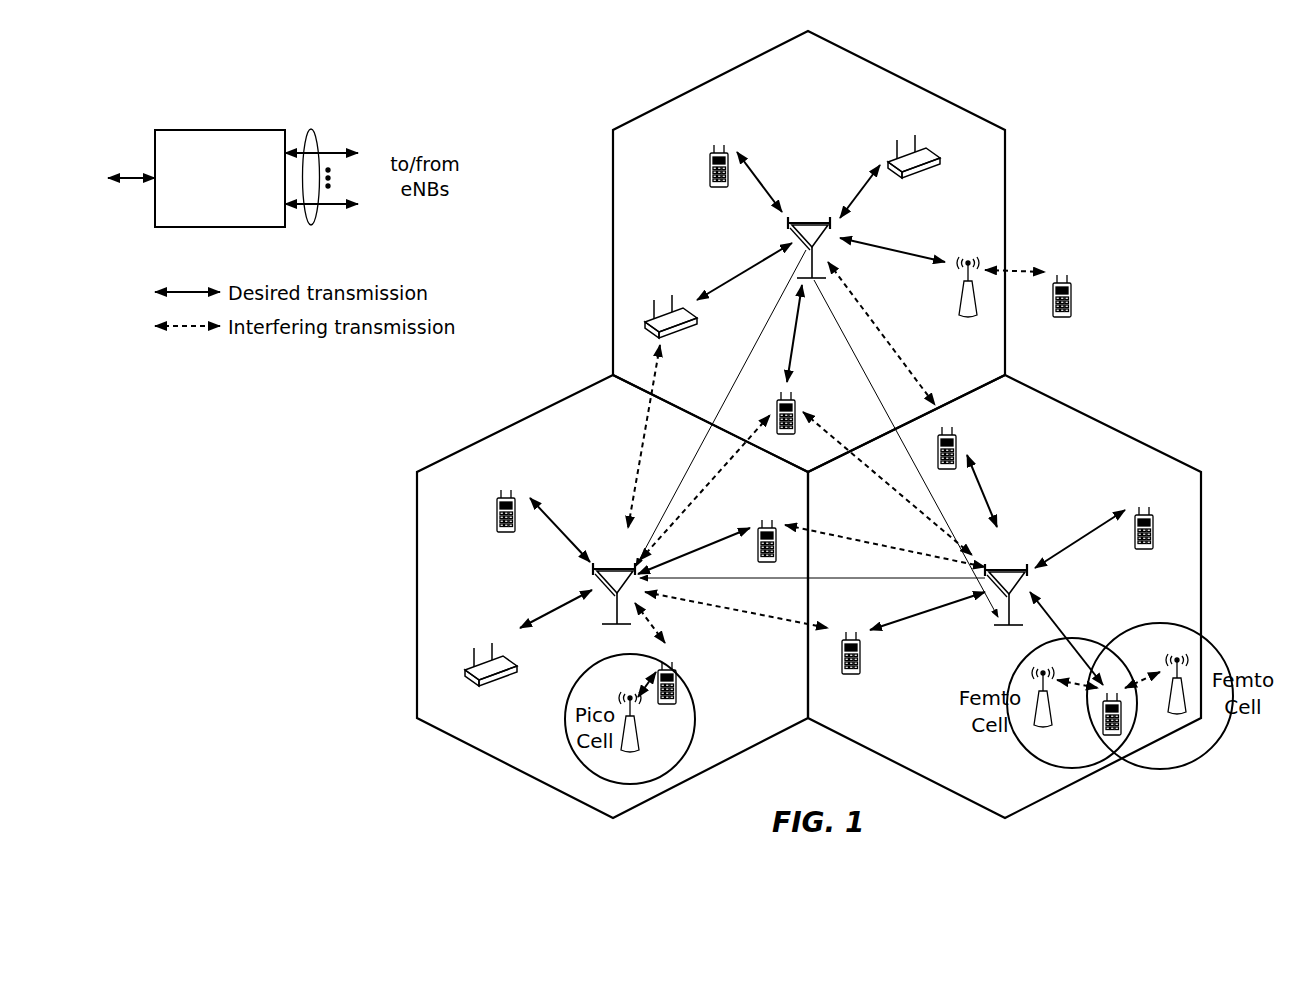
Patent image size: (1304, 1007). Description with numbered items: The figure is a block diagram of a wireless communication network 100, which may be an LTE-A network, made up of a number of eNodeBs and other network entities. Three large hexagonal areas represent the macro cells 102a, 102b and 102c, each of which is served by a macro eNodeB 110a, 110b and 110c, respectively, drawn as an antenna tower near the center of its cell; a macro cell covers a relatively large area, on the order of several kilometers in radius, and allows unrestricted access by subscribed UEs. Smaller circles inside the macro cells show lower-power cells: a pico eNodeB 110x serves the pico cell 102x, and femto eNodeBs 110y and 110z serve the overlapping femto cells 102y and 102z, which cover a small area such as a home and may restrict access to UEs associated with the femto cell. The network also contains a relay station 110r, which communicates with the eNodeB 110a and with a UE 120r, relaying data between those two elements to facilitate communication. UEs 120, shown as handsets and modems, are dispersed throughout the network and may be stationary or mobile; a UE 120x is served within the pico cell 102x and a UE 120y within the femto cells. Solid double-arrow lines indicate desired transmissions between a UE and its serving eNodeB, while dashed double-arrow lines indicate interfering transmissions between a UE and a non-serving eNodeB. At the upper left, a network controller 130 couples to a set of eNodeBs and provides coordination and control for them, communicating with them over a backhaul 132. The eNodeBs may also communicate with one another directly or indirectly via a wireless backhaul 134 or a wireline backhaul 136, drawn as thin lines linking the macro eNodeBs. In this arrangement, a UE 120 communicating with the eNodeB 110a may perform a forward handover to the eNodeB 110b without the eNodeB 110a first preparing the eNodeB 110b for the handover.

The wireless communication network 100 is at (1147, 90).
The macro cell 102a is at (905, 79).
The macro cell 102b is at (513, 424).
The macro cell 102c is at (1103, 424).
The pico cell 102x is at (582, 671).
The femto cell 102y is at (1014, 672).
The femto cell 102z is at (1151, 623).
The macro eNodeB 110a is at (806, 222).
The macro eNodeB 110b is at (618, 556).
The macro eNodeB 110c is at (1001, 569).
The relay station 110r is at (957, 306).
The pico eNodeB 110x is at (638, 744).
The femto eNodeB 110y is at (1051, 723).
The femto eNodeB 110z is at (1185, 710).
The UE 120 is at (711, 153).
The UE 120r is at (1072, 308).
The UE 120x is at (678, 671).
The UE 120y is at (1104, 725).
The network controller 130 is at (215, 129).
The backhaul 132 is at (325, 129).
The wireless backhaul 134 is at (713, 403).
The wireline backhaul 136 is at (870, 401).